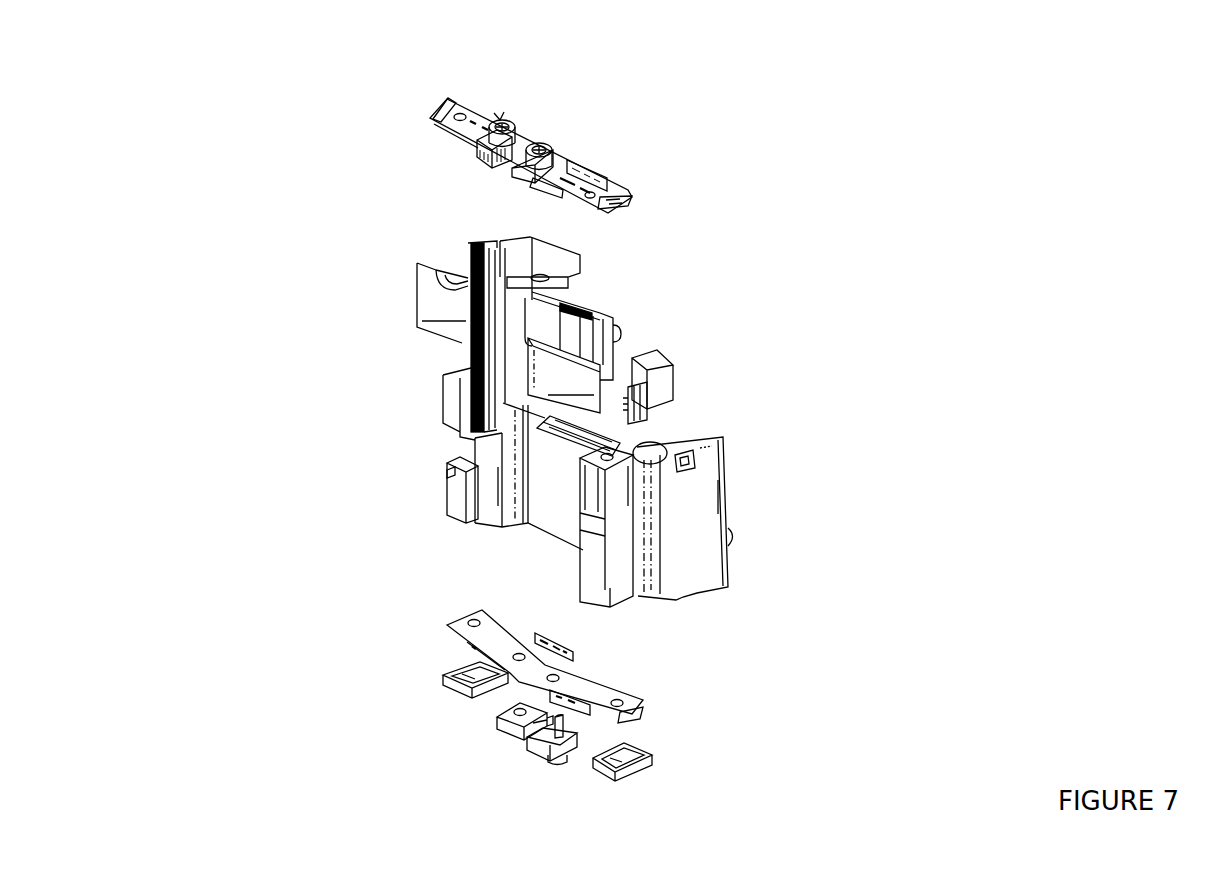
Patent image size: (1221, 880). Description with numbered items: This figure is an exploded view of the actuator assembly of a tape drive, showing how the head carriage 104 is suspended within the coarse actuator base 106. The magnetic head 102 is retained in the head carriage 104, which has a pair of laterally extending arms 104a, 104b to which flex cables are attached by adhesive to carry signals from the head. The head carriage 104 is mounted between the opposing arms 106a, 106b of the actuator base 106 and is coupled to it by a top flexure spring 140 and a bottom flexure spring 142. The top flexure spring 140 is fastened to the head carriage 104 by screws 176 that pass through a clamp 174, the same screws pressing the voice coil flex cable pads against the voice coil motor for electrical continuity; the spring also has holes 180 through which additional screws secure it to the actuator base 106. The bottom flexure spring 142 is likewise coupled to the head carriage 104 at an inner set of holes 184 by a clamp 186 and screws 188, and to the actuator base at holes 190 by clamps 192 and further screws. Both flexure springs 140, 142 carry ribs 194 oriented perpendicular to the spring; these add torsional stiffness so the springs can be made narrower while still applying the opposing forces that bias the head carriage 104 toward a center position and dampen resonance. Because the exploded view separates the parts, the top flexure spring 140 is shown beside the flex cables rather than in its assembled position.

The magnetic head 102 is at (465, 335).
The head carriage 104 is at (620, 323).
The laterally extending arm 104a is at (446, 303).
The laterally extending arm 104b is at (564, 375).
The actuator base 106 is at (683, 518).
The opposing arm 106a is at (474, 490).
The opposing arm 106b is at (606, 527).
The top flexure spring 140 is at (638, 197).
The bottom flexure spring 142 is at (545, 662).
The clamp 174 is at (486, 156).
The screws 176 is at (549, 137).
The holes 180 is at (459, 111).
The inner set of holes 184 is at (519, 651).
The clamp 186 is at (497, 725).
The screws 188 is at (554, 763).
The holes 190 is at (471, 617).
The clamps 192 is at (449, 691).
The ribs 194 is at (436, 103).